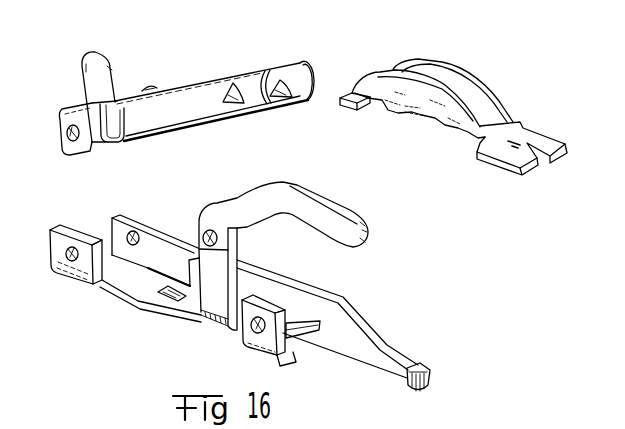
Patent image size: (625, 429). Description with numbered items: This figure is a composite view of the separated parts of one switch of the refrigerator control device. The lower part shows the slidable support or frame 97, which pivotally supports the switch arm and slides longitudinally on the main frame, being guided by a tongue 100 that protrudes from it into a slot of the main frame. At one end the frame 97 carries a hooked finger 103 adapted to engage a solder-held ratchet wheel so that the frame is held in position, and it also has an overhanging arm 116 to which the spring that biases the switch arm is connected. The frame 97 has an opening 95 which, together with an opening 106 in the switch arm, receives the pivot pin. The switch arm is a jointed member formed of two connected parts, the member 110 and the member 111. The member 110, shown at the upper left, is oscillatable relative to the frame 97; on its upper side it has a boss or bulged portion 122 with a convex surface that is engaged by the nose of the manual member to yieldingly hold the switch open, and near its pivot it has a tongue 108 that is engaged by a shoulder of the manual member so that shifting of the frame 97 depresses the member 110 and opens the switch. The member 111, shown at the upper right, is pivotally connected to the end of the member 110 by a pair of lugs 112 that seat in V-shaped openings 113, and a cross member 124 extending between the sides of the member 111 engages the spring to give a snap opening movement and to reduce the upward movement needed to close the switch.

The opening 95 is at (72, 249).
The slidable support or frame 97 is at (158, 245).
The tongue 100 is at (184, 298).
The hooked finger 103 is at (421, 365).
The opening 106 is at (67, 138).
The tongue 108 is at (97, 78).
The member 110 is at (193, 83).
The member 111 is at (418, 75).
The lugs 112 is at (350, 94).
The V-shaped openings 113 is at (277, 90).
The overhanging arm 116 is at (297, 202).
The boss or bulged portion 122 is at (152, 88).
The cross member 124 is at (455, 82).